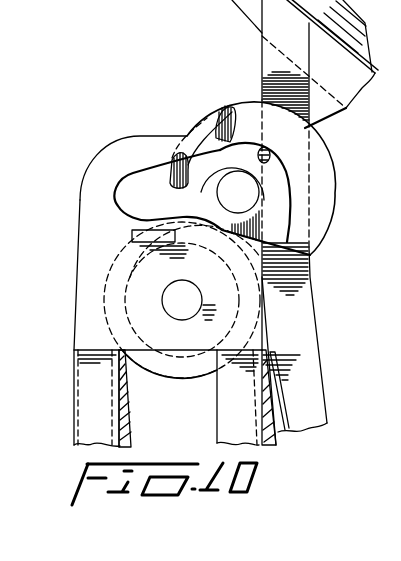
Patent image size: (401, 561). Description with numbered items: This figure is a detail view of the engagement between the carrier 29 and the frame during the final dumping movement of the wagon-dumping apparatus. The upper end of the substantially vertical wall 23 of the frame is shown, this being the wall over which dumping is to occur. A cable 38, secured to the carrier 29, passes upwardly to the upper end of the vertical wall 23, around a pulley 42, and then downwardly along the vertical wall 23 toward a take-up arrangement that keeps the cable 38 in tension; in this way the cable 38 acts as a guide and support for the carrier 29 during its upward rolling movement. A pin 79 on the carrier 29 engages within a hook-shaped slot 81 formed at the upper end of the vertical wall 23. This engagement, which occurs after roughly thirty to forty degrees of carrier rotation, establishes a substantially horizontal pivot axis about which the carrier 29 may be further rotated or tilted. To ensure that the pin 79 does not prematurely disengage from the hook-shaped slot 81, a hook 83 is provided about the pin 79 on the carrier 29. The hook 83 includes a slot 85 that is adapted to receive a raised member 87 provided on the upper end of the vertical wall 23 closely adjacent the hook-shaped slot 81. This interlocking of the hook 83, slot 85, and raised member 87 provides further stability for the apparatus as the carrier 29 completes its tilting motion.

The vertical wall 23 is at (75, 392).
The carrier 29 is at (260, 50).
The cable 38 is at (130, 438).
The pulley 42 is at (157, 367).
The pin 79 is at (248, 203).
The hook-shaped slot 81 is at (133, 198).
The hook 83 is at (208, 120).
The slot 85 is at (237, 117).
The raised member 87 is at (133, 243).